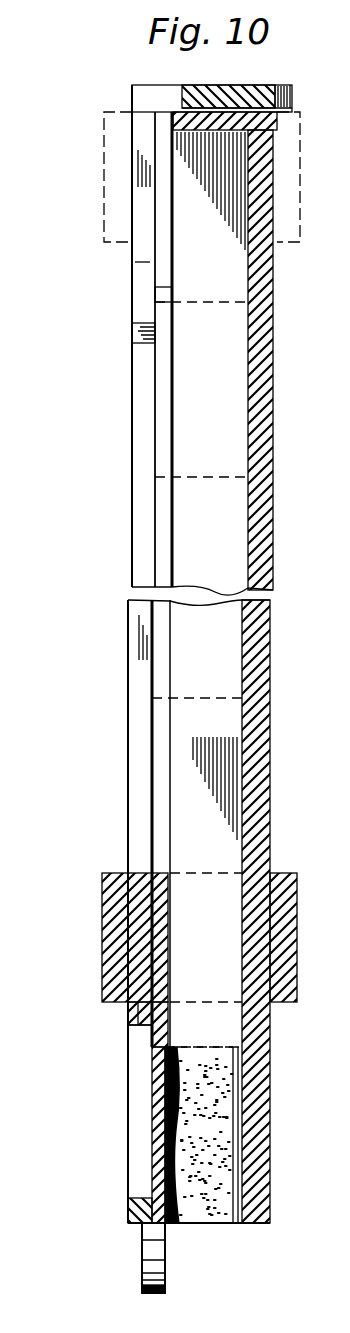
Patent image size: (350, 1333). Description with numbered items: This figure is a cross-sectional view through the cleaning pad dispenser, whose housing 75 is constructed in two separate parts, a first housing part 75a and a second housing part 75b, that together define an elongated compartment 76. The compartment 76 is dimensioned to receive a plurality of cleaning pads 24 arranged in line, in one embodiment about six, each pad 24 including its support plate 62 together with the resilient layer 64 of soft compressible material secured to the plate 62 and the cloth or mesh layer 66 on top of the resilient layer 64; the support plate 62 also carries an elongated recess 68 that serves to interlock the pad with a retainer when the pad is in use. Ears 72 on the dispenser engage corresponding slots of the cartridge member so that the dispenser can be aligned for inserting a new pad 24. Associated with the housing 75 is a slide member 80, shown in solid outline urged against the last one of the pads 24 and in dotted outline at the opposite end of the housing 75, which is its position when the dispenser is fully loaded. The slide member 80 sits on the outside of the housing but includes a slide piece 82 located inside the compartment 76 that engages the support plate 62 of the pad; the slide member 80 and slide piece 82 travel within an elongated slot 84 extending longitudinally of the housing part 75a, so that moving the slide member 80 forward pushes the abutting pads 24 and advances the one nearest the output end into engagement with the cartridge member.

The cleaning pad 24 is at (153, 356).
The support plate 62 is at (152, 1088).
The resilient layer 64 is at (212, 1210).
The mesh layer 66 is at (238, 1223).
The recess 68 is at (165, 1135).
The ears 72 is at (142, 1270).
The housing 75 is at (275, 730).
The housing part 75a is at (127, 545).
The housing part 75b is at (273, 548).
The compartment 76 is at (217, 274).
The slide member 80 is at (104, 175).
The slide piece 82 is at (152, 1037).
The elongated slot 84 is at (137, 620).